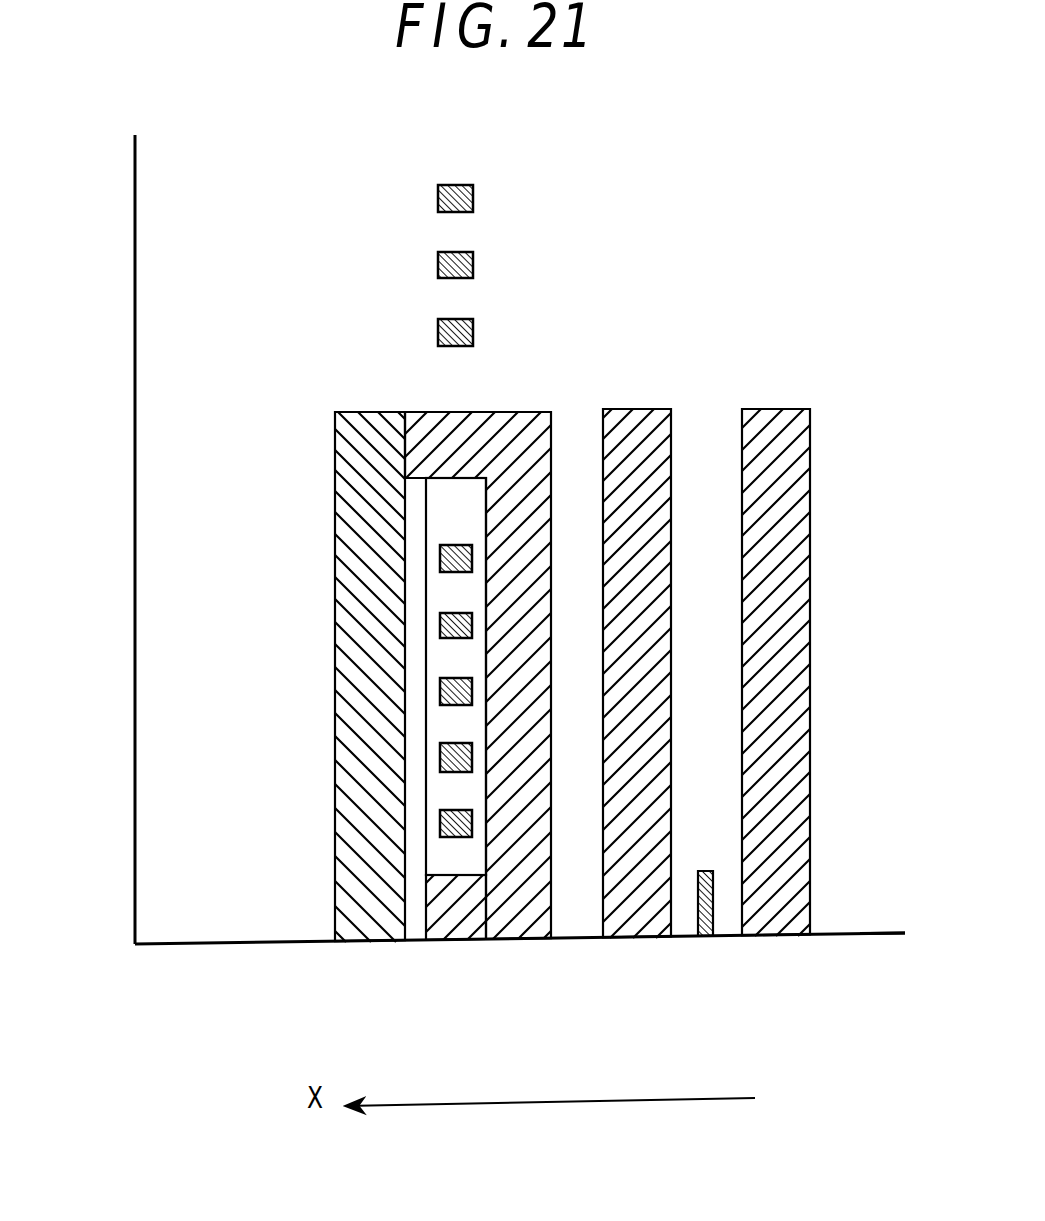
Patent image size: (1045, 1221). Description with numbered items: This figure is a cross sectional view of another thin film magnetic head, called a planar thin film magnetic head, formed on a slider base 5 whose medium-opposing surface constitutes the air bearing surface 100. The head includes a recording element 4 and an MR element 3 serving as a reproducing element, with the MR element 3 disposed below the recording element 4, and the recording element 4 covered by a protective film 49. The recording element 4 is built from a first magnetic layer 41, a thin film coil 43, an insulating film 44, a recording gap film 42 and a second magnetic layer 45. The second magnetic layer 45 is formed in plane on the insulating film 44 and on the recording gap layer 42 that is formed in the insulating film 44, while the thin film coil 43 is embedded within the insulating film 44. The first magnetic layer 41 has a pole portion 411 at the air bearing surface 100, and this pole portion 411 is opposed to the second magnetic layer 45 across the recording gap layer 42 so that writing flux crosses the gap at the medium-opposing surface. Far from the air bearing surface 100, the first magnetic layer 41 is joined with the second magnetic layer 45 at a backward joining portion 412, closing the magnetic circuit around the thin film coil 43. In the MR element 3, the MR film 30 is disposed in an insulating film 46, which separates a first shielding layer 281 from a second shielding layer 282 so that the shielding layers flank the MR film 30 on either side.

The MR element 3 is at (780, 954).
The recording element 4 is at (431, 613).
The slider base 5 is at (873, 917).
The MR film 30 is at (713, 890).
The first magnetic layer 41 is at (431, 600).
The recording gap film 42 is at (412, 838).
The thin film coil 43 is at (438, 265).
The insulating film 44 is at (447, 598).
The second magnetic layer 45 is at (365, 535).
The insulating film 46 is at (707, 432).
The protective film 49 is at (193, 820).
The air bearing surface 100 is at (164, 944).
The first shielding layer 281 is at (787, 432).
The second shielding layer 282 is at (638, 432).
The pole portion 411 is at (460, 905).
The backward joining portion 412 is at (445, 430).